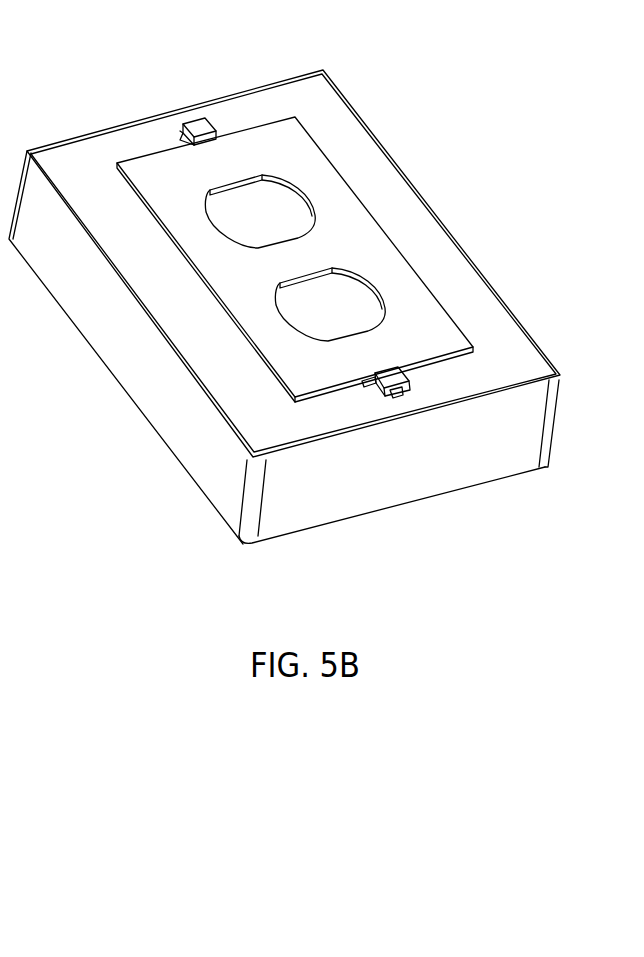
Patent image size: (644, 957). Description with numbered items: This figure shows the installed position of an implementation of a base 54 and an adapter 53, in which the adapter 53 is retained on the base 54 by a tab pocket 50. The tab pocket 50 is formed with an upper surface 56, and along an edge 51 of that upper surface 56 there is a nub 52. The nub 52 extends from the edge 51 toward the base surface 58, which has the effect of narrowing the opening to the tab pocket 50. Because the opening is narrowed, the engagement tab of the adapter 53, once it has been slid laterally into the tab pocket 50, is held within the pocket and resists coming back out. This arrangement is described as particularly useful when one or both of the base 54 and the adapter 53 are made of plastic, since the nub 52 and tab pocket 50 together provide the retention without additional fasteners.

The tab pocket 50 is at (426, 396).
The edge 51 is at (377, 380).
The nub 52 is at (393, 394).
The adapter 53 is at (298, 158).
The base 54 is at (445, 160).
The upper surface 56 is at (390, 373).
The base surface 58 is at (478, 300).